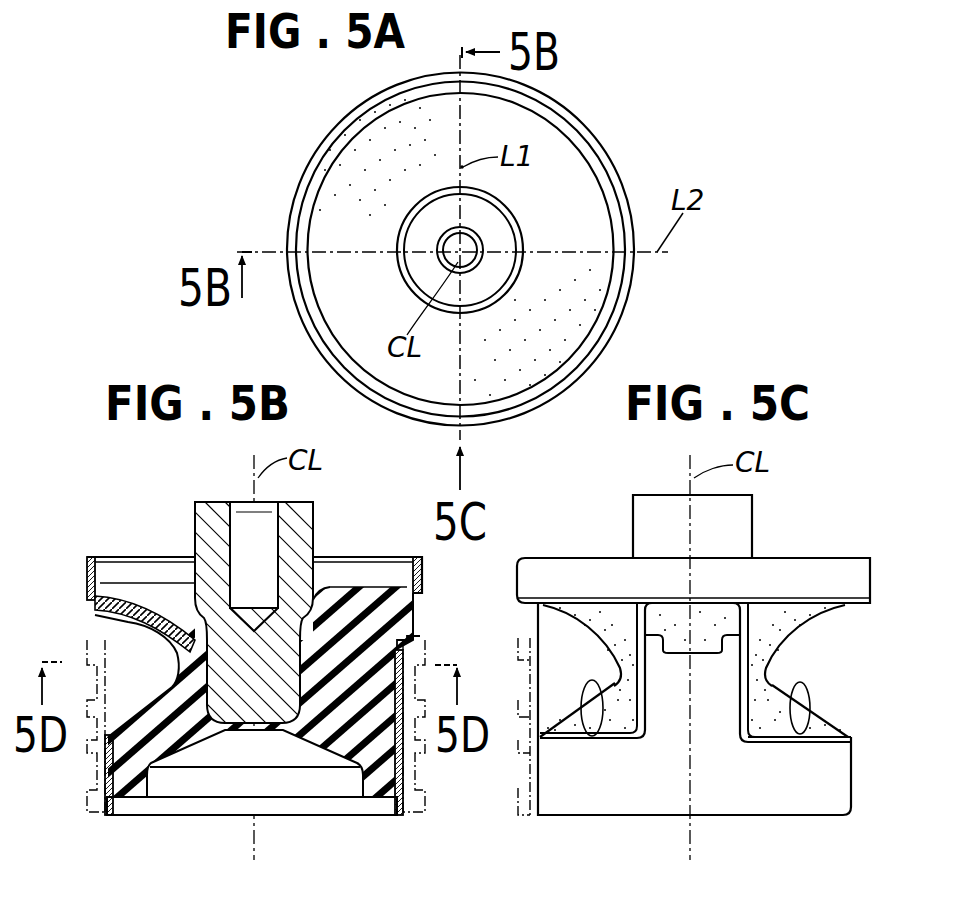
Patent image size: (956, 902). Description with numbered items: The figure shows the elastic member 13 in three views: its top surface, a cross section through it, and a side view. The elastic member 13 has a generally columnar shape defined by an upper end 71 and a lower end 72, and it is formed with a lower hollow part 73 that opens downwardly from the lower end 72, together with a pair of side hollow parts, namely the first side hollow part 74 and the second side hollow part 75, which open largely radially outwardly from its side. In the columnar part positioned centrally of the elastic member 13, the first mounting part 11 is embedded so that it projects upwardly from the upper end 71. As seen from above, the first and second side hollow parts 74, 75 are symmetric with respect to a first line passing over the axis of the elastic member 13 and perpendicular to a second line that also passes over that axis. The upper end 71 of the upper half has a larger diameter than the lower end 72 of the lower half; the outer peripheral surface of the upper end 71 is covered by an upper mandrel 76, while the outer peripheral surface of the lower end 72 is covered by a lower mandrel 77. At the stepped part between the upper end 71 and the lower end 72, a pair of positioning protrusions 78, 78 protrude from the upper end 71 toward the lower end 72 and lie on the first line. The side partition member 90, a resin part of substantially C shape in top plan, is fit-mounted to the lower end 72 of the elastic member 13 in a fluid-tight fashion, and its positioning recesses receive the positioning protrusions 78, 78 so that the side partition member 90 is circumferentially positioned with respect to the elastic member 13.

In FIG. 5A, the first mounting part 11 is at (503, 233).
In FIG. 5B, the first mounting part 11 is at (206, 518).
In FIG. 5C, the first mounting part 11 is at (633, 527).
In FIG. 5A, the elastic member 13 is at (353, 172).
In FIG. 5B, the elastic member 13 is at (362, 617).
In FIG. 5C, the elastic member 13 is at (783, 620).
In FIG. 5A, the upper end 71 is at (556, 152).
In FIG. 5B, the upper end 71 is at (109, 592).
In FIG. 5B, the lower end 72 is at (124, 798).
In FIG. 5B, the lower hollow part 73 is at (170, 758).
In FIG. 5C, the first side hollow part 74 is at (800, 734).
In FIG. 5B, the second side hollow part 75 is at (147, 624).
In FIG. 5C, the second side hollow part 75 is at (592, 736).
In FIG. 5A, the upper mandrel 76 is at (607, 172).
In FIG. 5B, the upper mandrel 76 is at (92, 572).
In FIG. 5C, the upper mandrel 76 is at (783, 568).
In FIG. 5B, the lower mandrel 77 is at (107, 812).
In FIG. 5C, the lower mandrel 77 is at (833, 805).
In FIG. 5B, the positioning protrusion 78 is at (410, 641).
In FIG. 5C, the positioning protrusion 78 is at (673, 652).
In FIG. 5B, the side partition member 90 is at (88, 792).
In FIG. 5C, the side partition member 90 is at (533, 818).